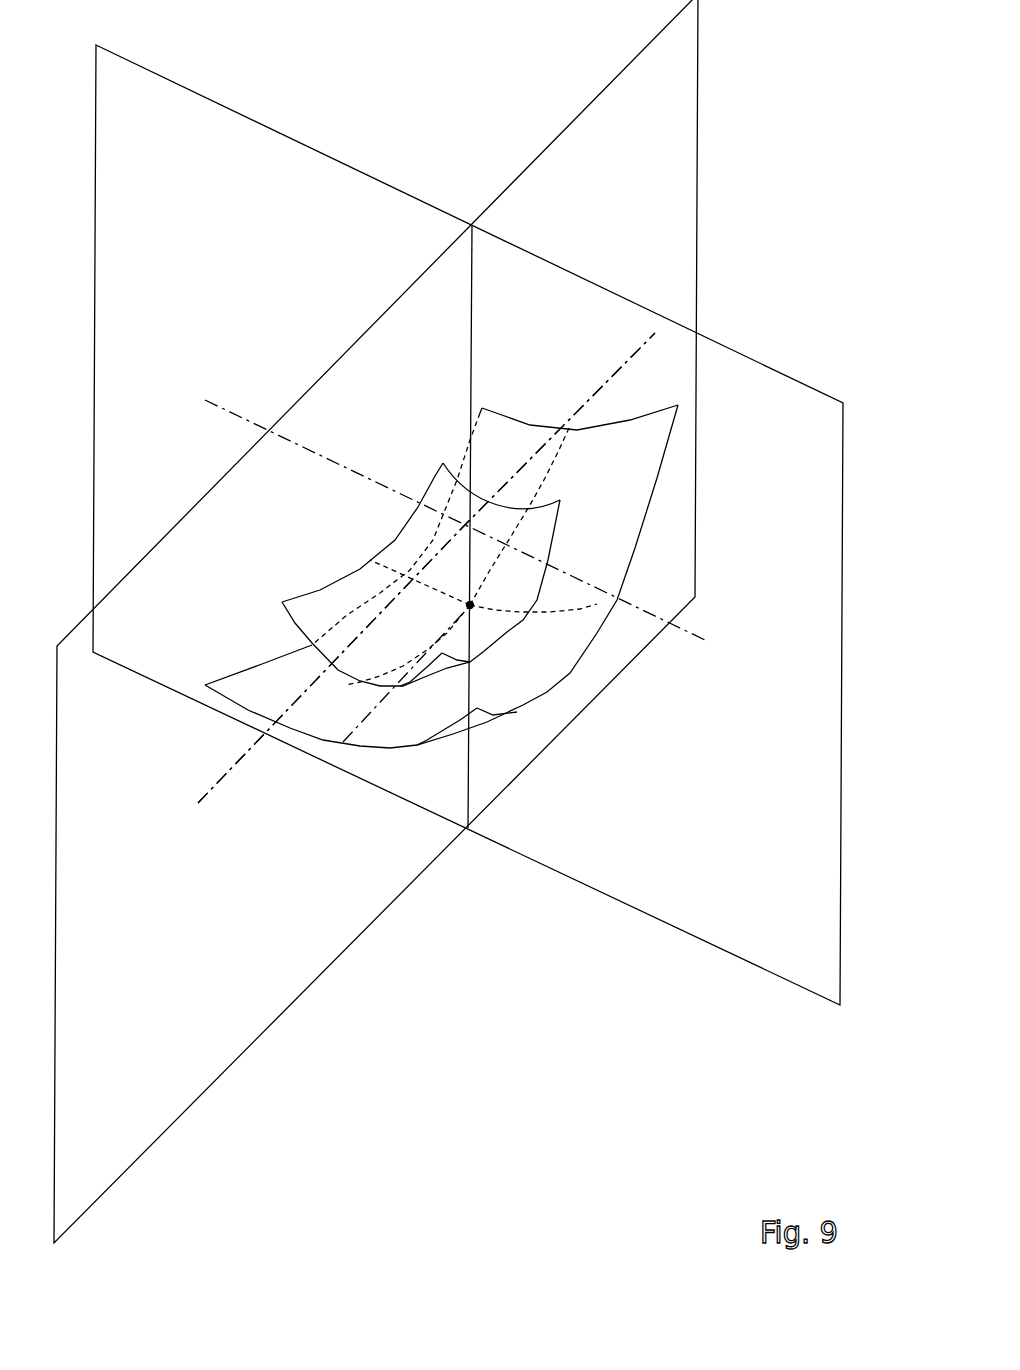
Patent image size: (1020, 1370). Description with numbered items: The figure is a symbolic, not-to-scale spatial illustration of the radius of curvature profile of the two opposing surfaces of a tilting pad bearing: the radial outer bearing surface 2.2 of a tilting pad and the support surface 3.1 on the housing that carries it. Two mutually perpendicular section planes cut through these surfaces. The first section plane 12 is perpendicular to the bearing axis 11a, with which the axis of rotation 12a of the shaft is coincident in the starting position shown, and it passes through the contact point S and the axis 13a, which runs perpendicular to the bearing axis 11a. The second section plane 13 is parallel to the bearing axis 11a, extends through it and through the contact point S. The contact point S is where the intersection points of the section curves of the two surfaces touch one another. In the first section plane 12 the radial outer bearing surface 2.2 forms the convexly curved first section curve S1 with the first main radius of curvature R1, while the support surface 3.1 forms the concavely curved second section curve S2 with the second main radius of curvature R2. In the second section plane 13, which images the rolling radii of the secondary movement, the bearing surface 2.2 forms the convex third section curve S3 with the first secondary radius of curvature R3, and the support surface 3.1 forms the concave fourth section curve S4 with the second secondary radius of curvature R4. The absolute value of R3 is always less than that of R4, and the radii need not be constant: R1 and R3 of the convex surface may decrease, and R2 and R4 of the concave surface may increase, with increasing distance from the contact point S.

The first section plane 12 is at (737, 933).
The second section plane 13 is at (240, 1025).
The axis 13a is at (212, 398).
The bearing axis 11a is at (413, 603).
The axis of rotation 12a is at (204, 808).
The support surface 3.1 is at (256, 685).
The radial outer bearing surface 2.2 is at (438, 495).
The contact point S is at (470, 605).
The first section curve S1 is at (388, 567).
The second section curve S2 is at (597, 606).
The third section curve S3 is at (370, 673).
The fourth section curve S4 is at (557, 462).
The first main radius of curvature R1 is at (520, 605).
The second main radius of curvature R2 is at (580, 558).
The first secondary radius of curvature R3 is at (397, 664).
The second secondary radius of curvature R4 is at (543, 482).